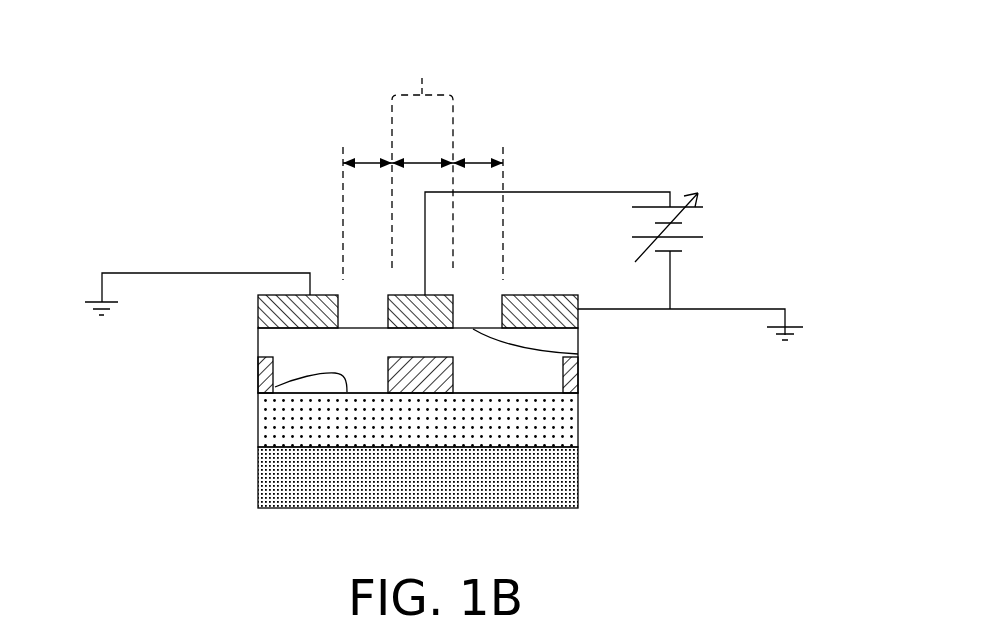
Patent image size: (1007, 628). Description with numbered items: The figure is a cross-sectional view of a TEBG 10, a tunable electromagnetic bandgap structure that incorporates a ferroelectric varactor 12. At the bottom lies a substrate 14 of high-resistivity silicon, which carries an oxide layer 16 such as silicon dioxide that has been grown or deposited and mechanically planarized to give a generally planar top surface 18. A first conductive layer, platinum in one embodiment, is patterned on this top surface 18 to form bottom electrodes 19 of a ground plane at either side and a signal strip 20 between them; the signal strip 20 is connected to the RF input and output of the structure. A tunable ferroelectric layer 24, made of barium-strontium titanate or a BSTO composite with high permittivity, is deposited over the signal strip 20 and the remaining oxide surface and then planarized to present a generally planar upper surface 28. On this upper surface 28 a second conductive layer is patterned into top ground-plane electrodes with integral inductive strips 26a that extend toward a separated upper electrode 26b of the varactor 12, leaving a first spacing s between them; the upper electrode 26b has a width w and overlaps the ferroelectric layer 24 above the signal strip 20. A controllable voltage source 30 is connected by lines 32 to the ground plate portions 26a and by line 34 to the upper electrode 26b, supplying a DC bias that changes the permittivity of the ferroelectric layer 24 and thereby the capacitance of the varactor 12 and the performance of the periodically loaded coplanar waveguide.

The TEBG 10 is at (198, 50).
The ferroelectric varactor 12 is at (423, 162).
The substrate 14 is at (545, 473).
The oxide layer 16 is at (542, 422).
The top surface 18 is at (275, 387).
The bottom electrodes 19 is at (258, 368).
The signal strip 20 is at (453, 372).
The tunable ferroelectric layer 24 is at (265, 347).
The inductive strips 26a is at (258, 297).
The upper electrode 26b is at (417, 295).
The upper surface 28 is at (578, 354).
The controllable voltage source 30 is at (700, 235).
The lines 32 is at (145, 273).
The line 34 is at (560, 192).